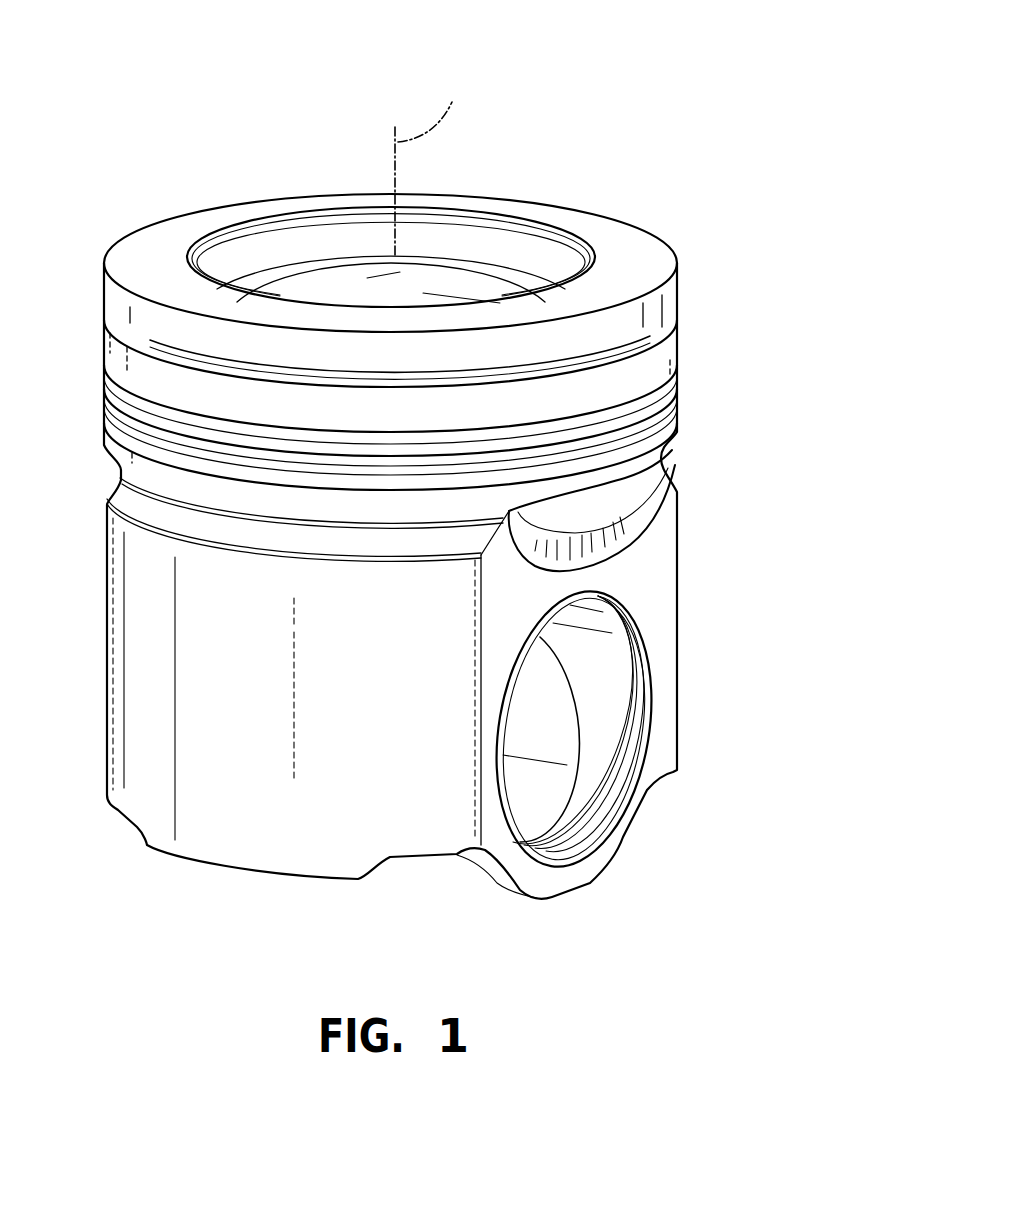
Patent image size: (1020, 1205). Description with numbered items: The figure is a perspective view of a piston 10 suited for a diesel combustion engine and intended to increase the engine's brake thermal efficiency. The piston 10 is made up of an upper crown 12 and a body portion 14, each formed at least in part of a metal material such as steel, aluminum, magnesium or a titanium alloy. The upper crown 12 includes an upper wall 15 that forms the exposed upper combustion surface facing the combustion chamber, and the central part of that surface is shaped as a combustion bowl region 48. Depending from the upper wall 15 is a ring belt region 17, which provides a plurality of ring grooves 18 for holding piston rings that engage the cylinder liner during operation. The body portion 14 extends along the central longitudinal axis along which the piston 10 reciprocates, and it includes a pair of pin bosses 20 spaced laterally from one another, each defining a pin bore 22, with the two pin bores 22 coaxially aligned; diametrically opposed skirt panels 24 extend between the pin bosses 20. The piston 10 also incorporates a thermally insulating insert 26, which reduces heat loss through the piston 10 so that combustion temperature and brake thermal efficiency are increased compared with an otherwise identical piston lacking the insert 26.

The piston 10 is at (556, 104).
The upper crown 12 is at (710, 262).
The body portion 14 is at (700, 487).
The upper wall 15 is at (286, 265).
The ring belt region 17 is at (92, 303).
The ring grooves 18 is at (665, 418).
The pin bosses 20 is at (566, 895).
The pin bore 22 is at (557, 838).
The skirt panels 24 is at (680, 674).
The thermally insulating insert 26 is at (650, 203).
The combustion bowl region 48 is at (540, 262).